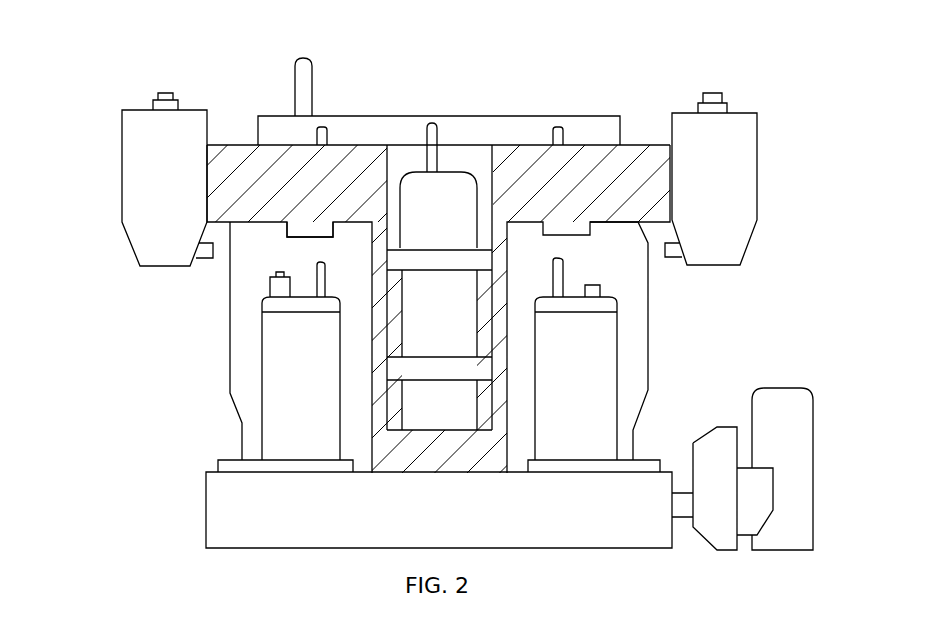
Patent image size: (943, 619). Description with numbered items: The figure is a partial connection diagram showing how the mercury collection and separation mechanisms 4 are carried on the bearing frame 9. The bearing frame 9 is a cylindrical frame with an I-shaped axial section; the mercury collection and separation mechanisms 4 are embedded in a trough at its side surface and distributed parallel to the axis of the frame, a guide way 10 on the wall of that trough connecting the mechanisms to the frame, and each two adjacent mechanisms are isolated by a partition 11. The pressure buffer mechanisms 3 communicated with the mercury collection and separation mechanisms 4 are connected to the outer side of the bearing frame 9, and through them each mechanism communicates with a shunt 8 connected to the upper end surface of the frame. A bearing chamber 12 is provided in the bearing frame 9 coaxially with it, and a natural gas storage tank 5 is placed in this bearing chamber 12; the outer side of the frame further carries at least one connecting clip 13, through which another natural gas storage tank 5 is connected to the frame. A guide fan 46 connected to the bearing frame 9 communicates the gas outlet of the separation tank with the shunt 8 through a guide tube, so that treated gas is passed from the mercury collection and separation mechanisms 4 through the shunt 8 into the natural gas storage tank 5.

The pressure buffer mechanism 3 is at (155, 162).
The mercury collection and separation mechanism 4 is at (577, 390).
The natural gas storage tank 5 is at (445, 218).
The shunt 8 is at (288, 125).
The bearing frame 9 is at (207, 507).
The guide way 10 is at (220, 462).
The partition 11 is at (242, 342).
The bearing chamber 12 is at (460, 163).
The connecting clip 13 is at (713, 477).
The guide fan 46 is at (355, 152).